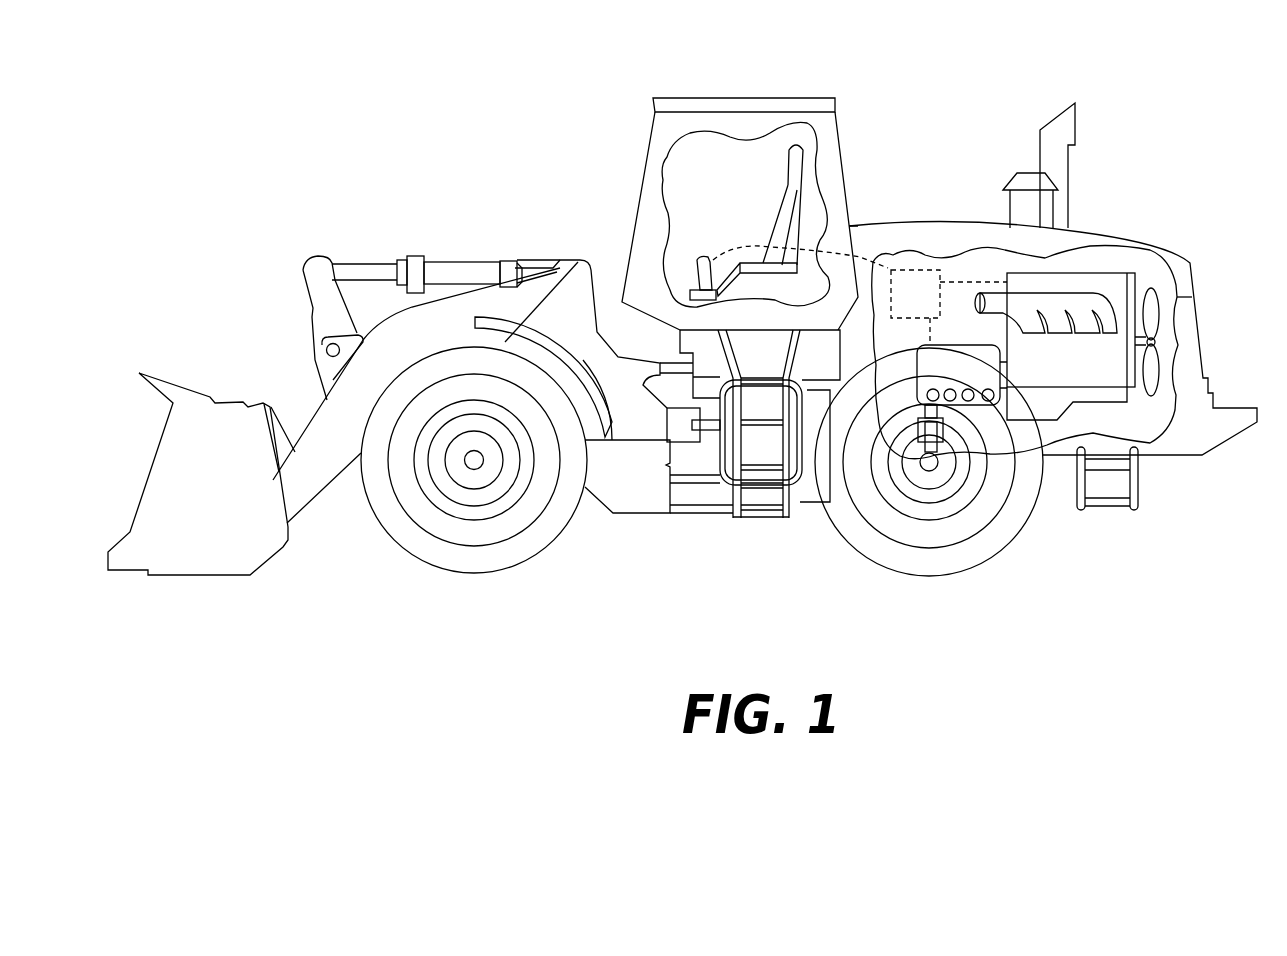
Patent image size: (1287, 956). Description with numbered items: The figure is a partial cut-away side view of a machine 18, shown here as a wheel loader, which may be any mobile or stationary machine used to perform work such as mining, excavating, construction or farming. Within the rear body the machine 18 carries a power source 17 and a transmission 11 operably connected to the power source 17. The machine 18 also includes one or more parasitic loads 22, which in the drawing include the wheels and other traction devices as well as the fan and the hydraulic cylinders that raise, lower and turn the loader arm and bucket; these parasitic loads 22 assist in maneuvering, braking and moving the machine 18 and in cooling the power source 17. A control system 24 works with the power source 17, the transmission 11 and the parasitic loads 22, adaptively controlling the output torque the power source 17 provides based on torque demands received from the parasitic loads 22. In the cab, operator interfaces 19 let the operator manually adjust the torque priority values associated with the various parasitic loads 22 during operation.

The machine 18 is at (322, 132).
The parasitic loads 22 is at (303, 242).
The operator interfaces 19 is at (703, 257).
The control system 24 is at (928, 307).
The power source 17 is at (1073, 365).
The transmission 11 is at (971, 379).